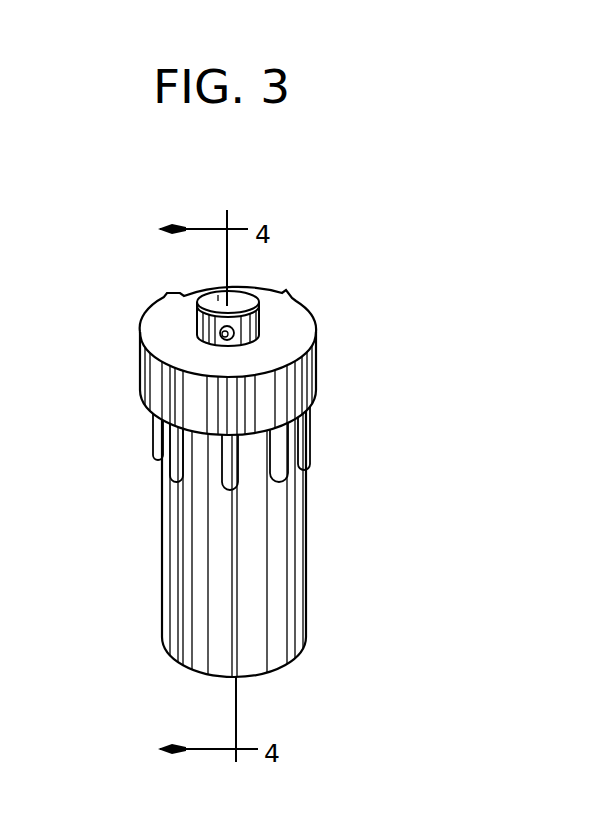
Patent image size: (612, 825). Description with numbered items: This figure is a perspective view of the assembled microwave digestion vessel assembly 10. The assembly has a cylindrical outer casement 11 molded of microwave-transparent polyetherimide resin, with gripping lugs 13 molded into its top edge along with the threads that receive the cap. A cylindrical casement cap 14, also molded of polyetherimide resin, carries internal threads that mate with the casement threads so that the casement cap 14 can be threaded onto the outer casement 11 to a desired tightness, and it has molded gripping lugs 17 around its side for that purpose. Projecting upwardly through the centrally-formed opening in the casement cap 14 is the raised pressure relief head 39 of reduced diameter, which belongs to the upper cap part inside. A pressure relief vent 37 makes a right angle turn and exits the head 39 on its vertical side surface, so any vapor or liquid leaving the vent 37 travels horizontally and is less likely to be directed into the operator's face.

The vessel assembly 10 is at (362, 453).
The outer casement 11 is at (307, 585).
The gripping lugs 13 is at (157, 477).
The casement cap 14 is at (285, 353).
The gripping lugs 17 is at (315, 403).
The pressure relief vent 37 is at (140, 340).
The pressure relief head 39 is at (154, 304).